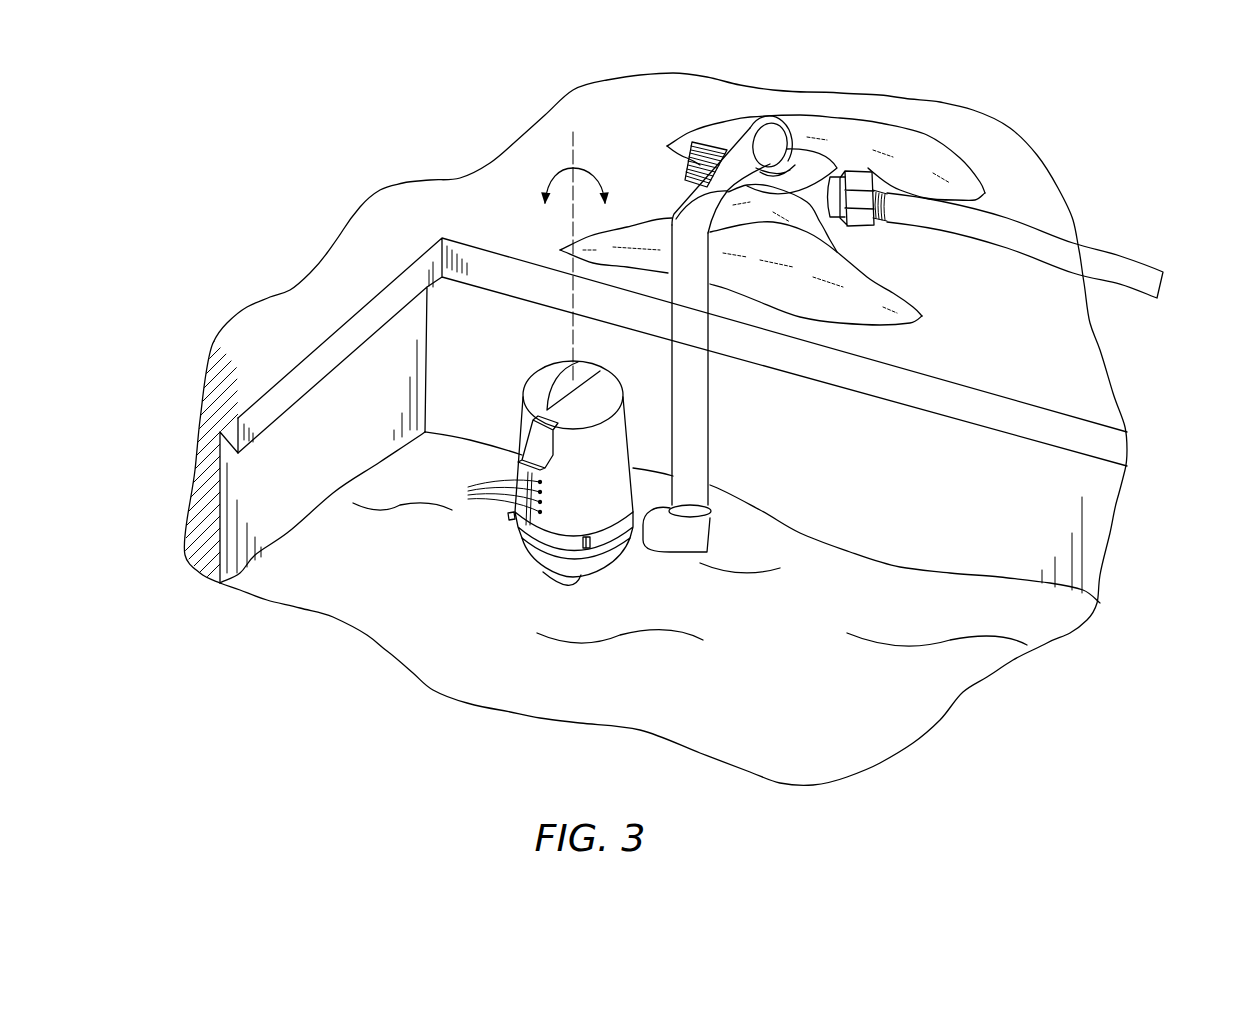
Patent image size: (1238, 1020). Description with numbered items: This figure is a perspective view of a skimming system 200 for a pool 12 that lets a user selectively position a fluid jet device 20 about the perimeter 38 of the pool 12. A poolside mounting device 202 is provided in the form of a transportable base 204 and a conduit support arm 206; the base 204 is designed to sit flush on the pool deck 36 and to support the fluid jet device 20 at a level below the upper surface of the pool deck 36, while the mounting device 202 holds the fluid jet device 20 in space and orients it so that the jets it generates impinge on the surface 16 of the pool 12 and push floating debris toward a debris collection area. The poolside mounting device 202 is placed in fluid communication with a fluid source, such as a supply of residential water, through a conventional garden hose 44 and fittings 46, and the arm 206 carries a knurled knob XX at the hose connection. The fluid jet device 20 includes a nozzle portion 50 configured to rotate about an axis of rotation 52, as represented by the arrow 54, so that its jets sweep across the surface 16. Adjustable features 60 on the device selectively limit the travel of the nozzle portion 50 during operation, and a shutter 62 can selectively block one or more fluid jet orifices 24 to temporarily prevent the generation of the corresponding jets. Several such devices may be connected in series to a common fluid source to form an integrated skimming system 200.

The skimming system 200 is at (405, 82).
The poolside mounting device 202 is at (705, 70).
The transportable base 204 is at (823, 130).
The conduit support arm 206 is at (772, 130).
The valve knob XX is at (712, 140).
The fittings 46 is at (857, 193).
The garden hose 44 is at (1122, 258).
The axis of rotation 52 is at (572, 158).
The arrow 54 is at (550, 177).
The pool deck 36 is at (345, 257).
The perimeter 38 is at (317, 350).
The pool 12 is at (250, 363).
The shutter 62 is at (537, 436).
The nozzle portion 50 is at (613, 453).
The fluid jet orifices 24 is at (490, 495).
The adjustable features 60 is at (510, 520).
The surface 16 is at (874, 716).
The fluid jet device 20 is at (736, 650).